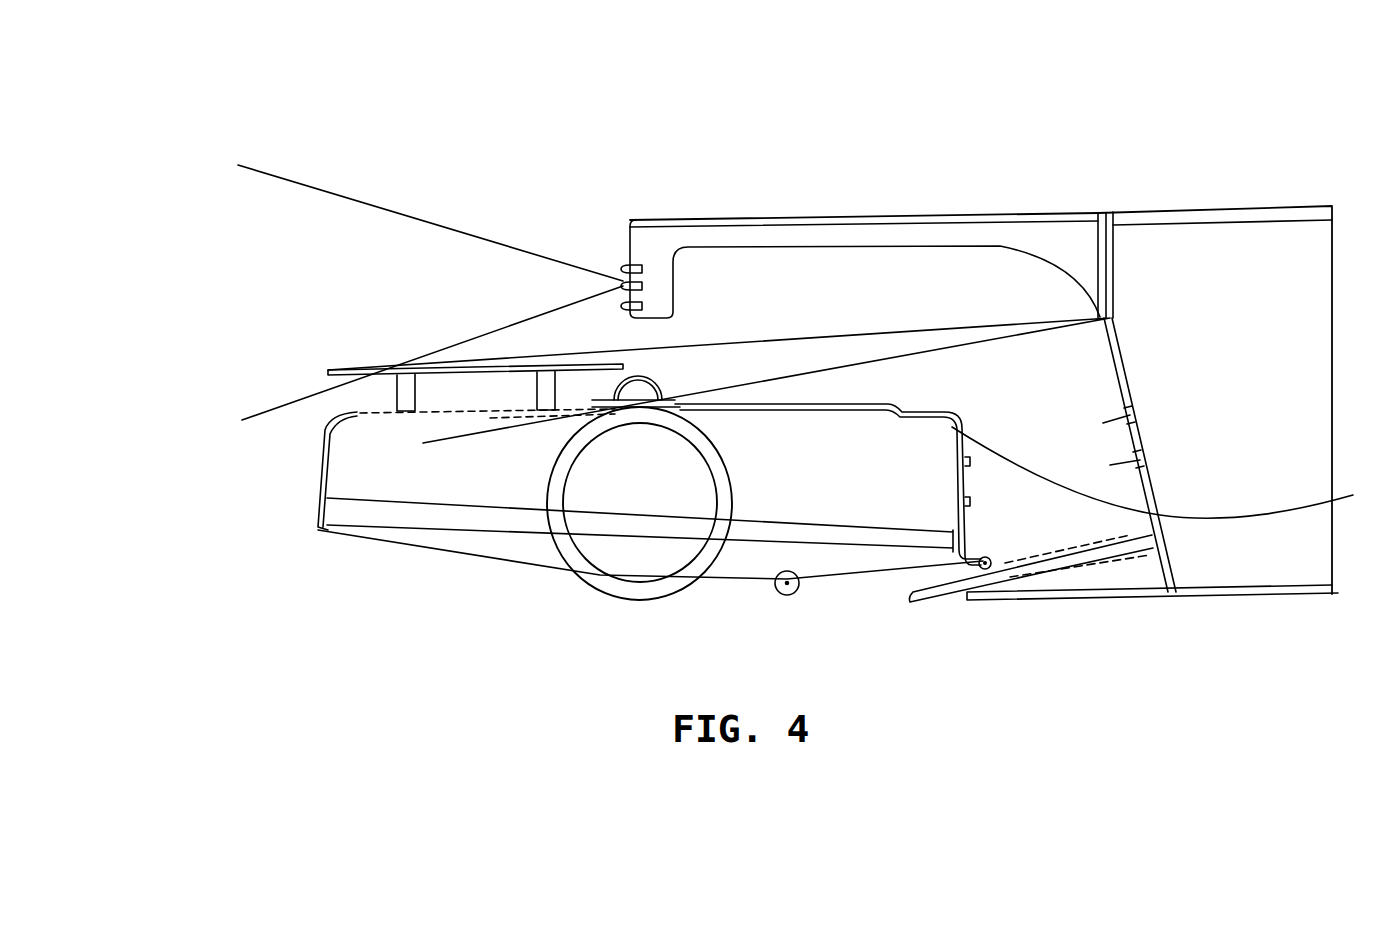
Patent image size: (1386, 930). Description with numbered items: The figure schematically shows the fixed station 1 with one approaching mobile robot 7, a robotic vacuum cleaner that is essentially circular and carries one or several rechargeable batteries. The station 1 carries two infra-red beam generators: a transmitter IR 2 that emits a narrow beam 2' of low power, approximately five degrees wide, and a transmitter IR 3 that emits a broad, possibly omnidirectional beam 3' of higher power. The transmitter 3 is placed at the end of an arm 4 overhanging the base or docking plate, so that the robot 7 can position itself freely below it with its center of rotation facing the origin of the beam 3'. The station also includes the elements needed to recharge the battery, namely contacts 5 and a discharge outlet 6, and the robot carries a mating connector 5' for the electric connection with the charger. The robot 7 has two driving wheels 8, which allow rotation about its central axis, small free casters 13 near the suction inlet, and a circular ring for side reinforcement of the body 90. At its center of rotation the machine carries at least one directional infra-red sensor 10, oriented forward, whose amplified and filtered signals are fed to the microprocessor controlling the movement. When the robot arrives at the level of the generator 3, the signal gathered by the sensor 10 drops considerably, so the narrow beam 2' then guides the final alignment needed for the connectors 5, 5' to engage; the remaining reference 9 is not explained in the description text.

The fixed station 1 is at (1216, 160).
The infra-red transmitter 2 is at (1240, 402).
The narrow beam 2' is at (719, 380).
The infra-red transmitter 3 is at (590, 240).
The broad beam 3' is at (430, 292).
The arm 4 is at (907, 237).
The contacts 5 is at (1260, 415).
The connector 5' is at (1031, 580).
The discharge outlet 6 is at (1065, 565).
The mobile robot 7 is at (244, 519).
The driving wheels 8 is at (572, 557).
The rail band 9 is at (387, 592).
The circular ring for side reinforcement of the body 90 is at (420, 421).
The directional infra-red sensor 10 is at (655, 380).
The free casters 13 is at (797, 596).